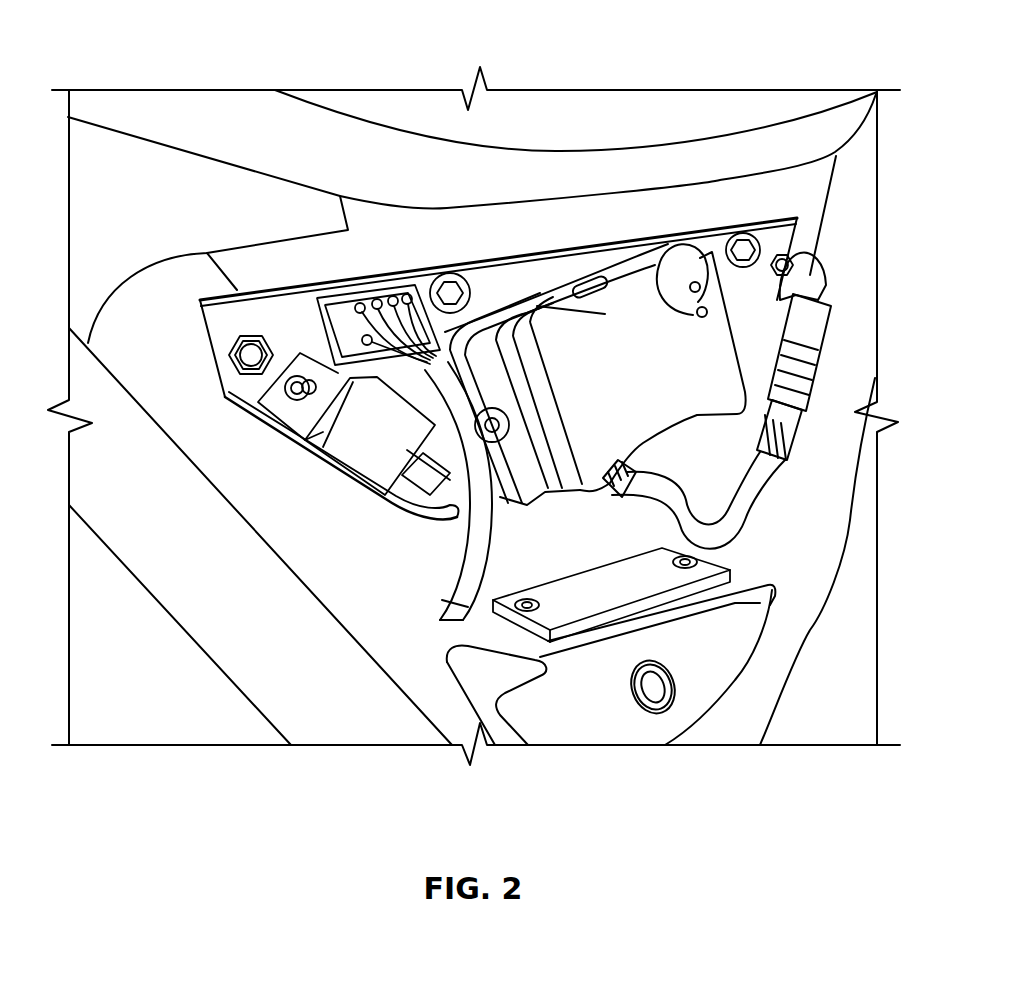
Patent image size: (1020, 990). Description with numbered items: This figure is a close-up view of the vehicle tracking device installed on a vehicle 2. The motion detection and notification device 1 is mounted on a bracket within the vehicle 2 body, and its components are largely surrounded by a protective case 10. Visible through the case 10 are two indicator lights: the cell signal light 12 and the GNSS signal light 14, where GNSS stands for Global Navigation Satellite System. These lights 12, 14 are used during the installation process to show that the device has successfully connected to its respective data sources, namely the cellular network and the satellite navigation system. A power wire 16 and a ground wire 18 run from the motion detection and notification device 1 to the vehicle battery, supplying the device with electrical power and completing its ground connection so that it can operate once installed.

The motion detection and notification device 1 is at (634, 367).
The vehicle body 2 is at (236, 148).
The protective case 10 is at (578, 463).
The cell signal light 12 is at (712, 252).
The GNSS signal light 14 is at (660, 262).
The power wire 16 is at (598, 484).
The ground wire 18 is at (708, 522).